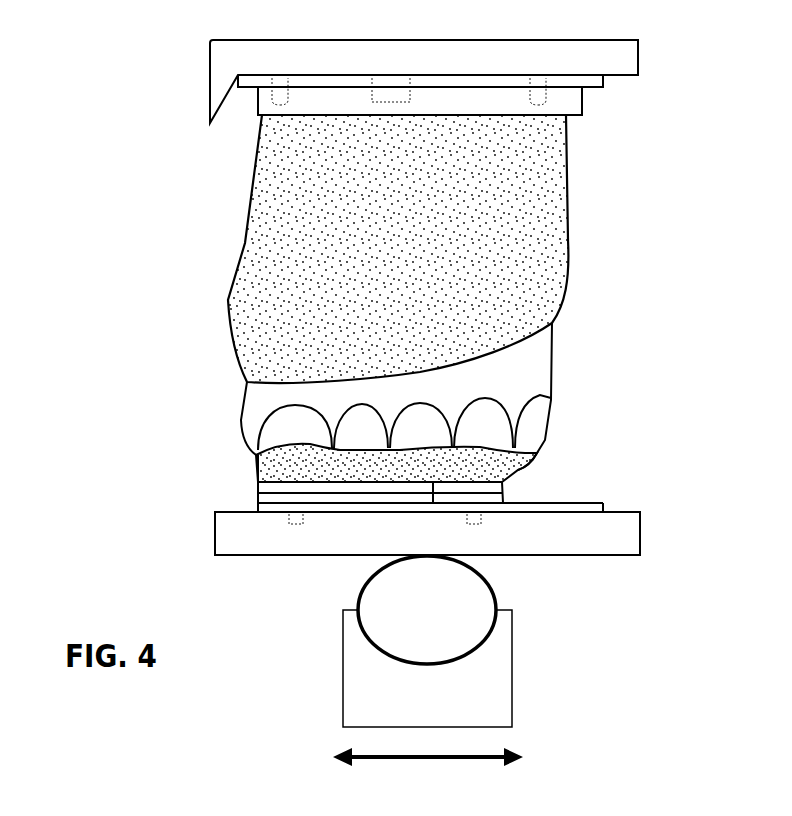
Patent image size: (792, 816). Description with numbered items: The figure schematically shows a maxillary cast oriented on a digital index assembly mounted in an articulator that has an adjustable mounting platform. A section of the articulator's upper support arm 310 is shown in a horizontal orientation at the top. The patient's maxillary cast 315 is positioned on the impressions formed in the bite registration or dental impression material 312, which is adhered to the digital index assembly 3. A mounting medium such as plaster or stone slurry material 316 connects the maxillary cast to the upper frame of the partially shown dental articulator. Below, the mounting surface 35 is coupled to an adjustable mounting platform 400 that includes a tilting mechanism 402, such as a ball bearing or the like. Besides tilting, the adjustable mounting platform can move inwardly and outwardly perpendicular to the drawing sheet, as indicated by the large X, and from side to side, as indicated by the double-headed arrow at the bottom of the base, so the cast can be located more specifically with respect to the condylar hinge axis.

The upper support arm 310 is at (655, 58).
The plaster or stone slurry material 316 is at (566, 205).
The maxillary cast 315 is at (534, 365).
The dental impression material 312 is at (280, 462).
The digital index assembly 3 is at (258, 494).
The mounting surface 35 is at (427, 529).
The adjustable mounting platform 400 is at (618, 577).
The tilting mechanism 402 is at (427, 610).